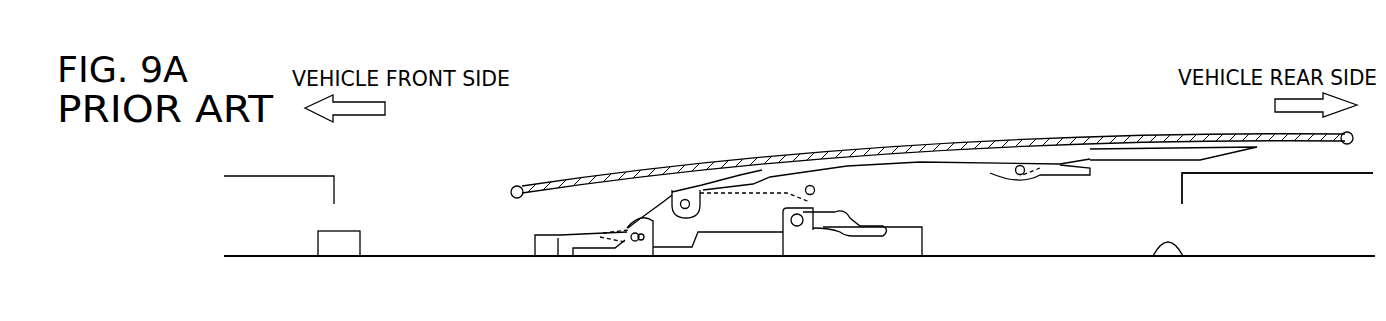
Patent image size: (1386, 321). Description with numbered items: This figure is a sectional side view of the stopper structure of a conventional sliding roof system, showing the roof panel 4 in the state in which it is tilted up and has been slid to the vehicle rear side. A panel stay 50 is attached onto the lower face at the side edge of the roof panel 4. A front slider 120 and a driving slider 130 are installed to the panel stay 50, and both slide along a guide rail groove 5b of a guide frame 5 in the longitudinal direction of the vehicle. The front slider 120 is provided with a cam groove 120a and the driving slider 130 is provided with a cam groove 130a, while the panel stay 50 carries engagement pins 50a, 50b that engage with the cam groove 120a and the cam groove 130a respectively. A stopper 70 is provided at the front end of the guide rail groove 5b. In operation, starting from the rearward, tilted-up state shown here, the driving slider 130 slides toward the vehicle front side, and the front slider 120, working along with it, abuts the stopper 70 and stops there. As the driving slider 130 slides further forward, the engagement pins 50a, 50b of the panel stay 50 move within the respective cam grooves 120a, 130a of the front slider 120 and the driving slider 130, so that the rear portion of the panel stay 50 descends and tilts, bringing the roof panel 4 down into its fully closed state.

The roof panel 4 is at (1045, 138).
The guide frame 5 is at (1232, 256).
The guide rail groove 5b is at (1180, 250).
The panel stay 50 is at (1057, 177).
The engagement pin 50a is at (643, 256).
The engagement pin 50b is at (790, 256).
The stopper 70 is at (348, 238).
The front slider 120 is at (547, 256).
The cam groove 120a is at (608, 256).
The driving slider 130 is at (913, 256).
The cam groove 130a is at (852, 256).